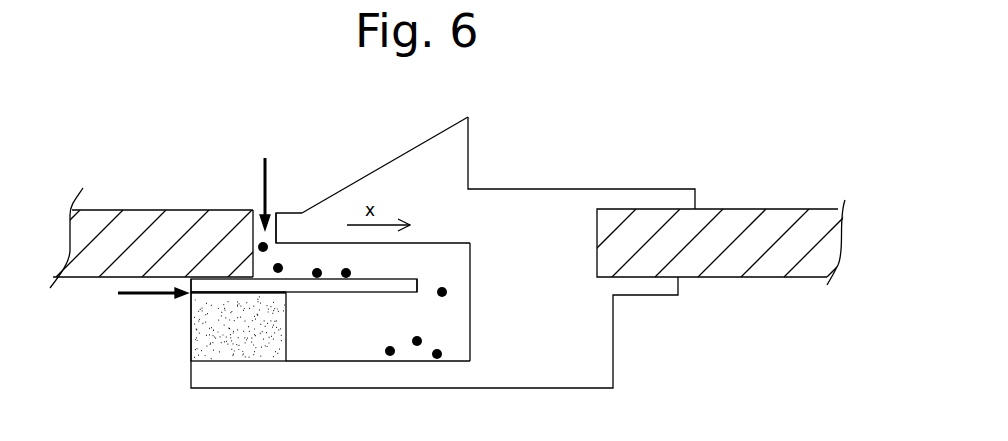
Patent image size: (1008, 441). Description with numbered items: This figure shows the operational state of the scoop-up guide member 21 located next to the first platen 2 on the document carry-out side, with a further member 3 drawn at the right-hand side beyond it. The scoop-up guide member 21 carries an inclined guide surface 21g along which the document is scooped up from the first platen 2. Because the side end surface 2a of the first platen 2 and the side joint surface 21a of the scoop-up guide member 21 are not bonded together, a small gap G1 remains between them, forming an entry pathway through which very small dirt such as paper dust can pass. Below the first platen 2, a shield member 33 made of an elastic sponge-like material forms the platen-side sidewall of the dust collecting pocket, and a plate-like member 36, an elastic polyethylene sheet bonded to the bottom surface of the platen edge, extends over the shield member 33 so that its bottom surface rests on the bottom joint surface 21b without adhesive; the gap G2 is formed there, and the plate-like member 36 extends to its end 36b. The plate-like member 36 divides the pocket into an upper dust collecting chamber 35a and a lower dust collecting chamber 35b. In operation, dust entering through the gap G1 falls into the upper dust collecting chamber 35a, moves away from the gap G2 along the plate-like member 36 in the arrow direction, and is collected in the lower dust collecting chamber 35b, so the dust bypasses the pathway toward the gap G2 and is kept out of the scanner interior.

The first platen 2 is at (138, 217).
The side end surface of the first platen 2a is at (260, 206).
The second member 3 is at (735, 215).
The scoop-up guide member 21 is at (413, 149).
The side joint surface of the scoop-up guide member 21a is at (273, 211).
The bottom joint surface 21b is at (232, 293).
The guide surface 21g is at (330, 197).
The shield member 33 is at (213, 348).
The upper dust collecting chamber 35a is at (428, 257).
The lower dust collecting chamber 35b is at (453, 340).
The plate-like member 36 is at (314, 293).
The tip of plate 36b is at (418, 286).
The gap G1 is at (259, 181).
The gap G2 is at (136, 293).
The element dust is at (455, 293).